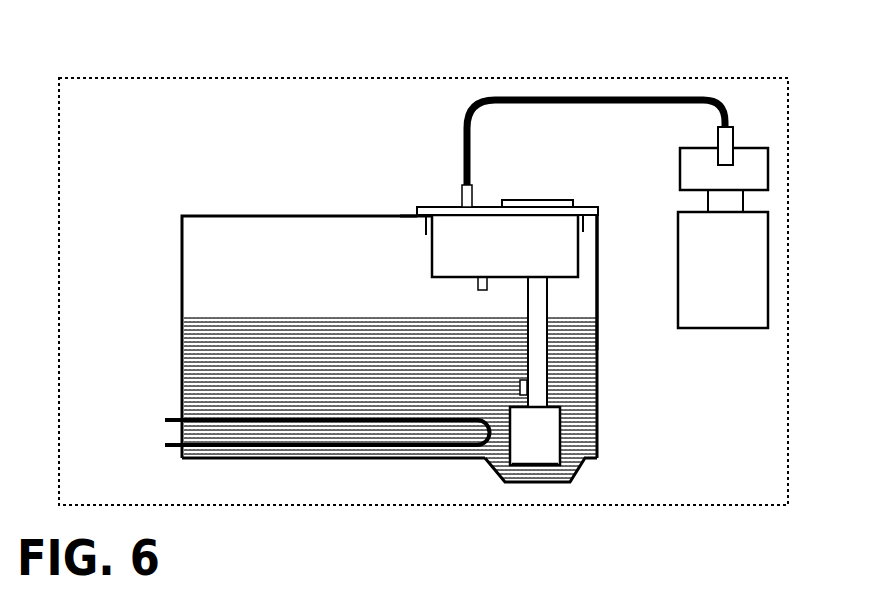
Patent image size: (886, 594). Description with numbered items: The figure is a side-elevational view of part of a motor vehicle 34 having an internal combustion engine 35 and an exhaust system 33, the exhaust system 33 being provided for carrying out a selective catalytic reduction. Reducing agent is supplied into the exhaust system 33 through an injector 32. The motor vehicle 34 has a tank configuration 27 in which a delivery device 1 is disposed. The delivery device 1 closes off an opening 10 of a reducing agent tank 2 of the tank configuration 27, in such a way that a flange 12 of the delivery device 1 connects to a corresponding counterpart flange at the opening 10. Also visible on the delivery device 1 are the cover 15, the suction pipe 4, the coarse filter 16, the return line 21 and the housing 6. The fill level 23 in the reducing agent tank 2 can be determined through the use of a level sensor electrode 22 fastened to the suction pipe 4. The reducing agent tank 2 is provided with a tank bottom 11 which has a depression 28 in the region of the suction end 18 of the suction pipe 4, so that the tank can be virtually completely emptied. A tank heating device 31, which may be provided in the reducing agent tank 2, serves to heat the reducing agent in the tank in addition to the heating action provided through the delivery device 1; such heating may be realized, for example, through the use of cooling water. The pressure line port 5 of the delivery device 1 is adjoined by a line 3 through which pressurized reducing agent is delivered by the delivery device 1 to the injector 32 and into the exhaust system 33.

The delivery device 1 is at (597, 208).
The reducing agent tank 2 is at (598, 290).
The line 3 is at (463, 130).
The suction pipe 4 is at (548, 307).
The pressure line port 5 is at (472, 188).
The housing 6 is at (578, 253).
The opening 10 is at (402, 218).
The tank bottom 11 is at (307, 460).
The flange 12 is at (426, 214).
The cover 15 is at (556, 202).
The coarse filter 16 is at (548, 430).
The suction end 18 is at (552, 443).
The return line 21 is at (477, 289).
The level sensor electrode 22 is at (520, 388).
The fill level 23 is at (215, 320).
The tank configuration 27 is at (176, 212).
The depression 28 is at (583, 476).
The tank heating device 31 is at (167, 445).
The injector 32 is at (718, 128).
The exhaust system 33 is at (768, 160).
The motor vehicle 34 is at (108, 78).
The internal combustion engine 35 is at (768, 230).